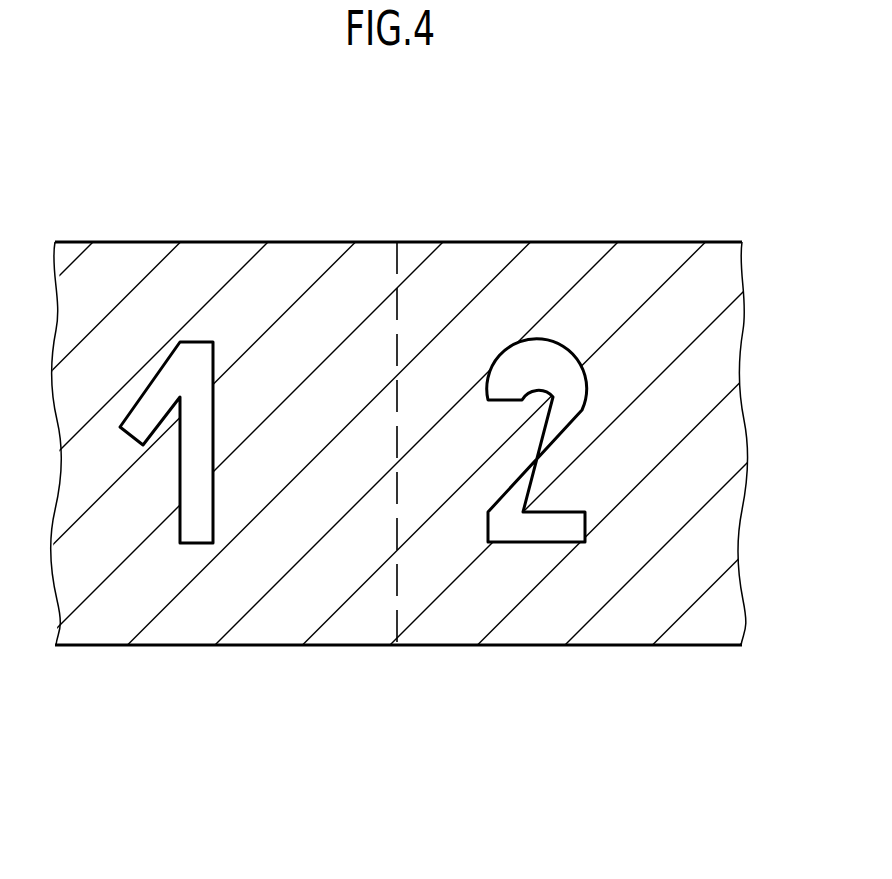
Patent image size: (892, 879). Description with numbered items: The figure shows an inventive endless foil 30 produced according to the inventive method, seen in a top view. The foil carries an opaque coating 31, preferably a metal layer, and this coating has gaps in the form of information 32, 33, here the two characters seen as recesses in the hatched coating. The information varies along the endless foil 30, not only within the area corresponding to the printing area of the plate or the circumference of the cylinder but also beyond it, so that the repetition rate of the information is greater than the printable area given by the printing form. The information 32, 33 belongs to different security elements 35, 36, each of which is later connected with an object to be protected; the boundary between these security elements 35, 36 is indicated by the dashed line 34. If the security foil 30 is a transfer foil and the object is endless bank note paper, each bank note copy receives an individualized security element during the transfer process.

The endless foil 30 is at (120, 677).
The opaque coating 31 is at (282, 628).
The information 32 is at (175, 367).
The information 33 is at (545, 350).
The dashed line 34 is at (398, 283).
The security element 35 is at (265, 240).
The security element 36 is at (502, 240).